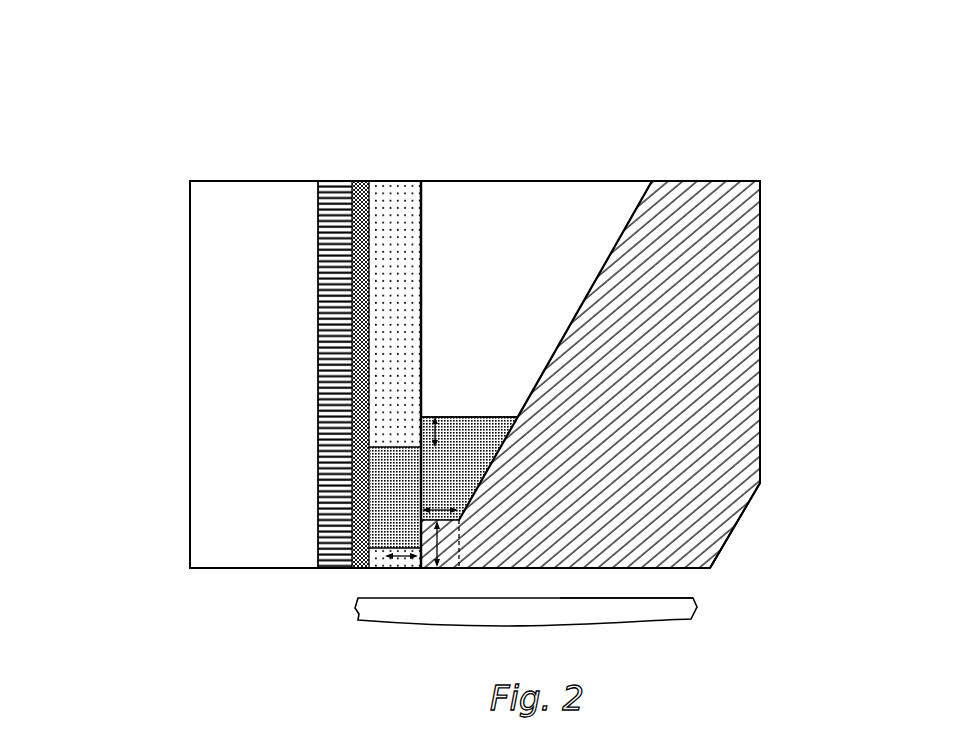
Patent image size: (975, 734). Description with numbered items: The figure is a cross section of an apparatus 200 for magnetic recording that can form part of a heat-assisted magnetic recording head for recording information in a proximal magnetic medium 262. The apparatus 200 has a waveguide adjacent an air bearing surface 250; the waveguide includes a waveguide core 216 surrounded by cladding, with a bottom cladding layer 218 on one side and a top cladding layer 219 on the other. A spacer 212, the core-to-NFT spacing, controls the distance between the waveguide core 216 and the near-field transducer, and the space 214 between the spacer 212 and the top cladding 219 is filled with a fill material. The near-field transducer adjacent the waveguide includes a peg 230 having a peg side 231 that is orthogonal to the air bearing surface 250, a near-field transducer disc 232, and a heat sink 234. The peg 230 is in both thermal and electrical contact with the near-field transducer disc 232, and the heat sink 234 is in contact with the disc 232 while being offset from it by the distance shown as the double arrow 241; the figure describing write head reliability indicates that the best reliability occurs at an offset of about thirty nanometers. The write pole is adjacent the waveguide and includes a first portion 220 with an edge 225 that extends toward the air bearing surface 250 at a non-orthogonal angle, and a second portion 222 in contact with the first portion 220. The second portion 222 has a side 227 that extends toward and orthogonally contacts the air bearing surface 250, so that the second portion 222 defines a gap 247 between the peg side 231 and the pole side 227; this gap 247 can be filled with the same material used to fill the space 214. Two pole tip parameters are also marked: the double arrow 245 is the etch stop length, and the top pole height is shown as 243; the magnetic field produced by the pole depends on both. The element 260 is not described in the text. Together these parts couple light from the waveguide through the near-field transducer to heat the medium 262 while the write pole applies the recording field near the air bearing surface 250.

The apparatus 200 is at (573, 63).
The spacer 212 is at (360, 182).
The space 214 is at (398, 201).
The waveguide core 216 is at (318, 238).
The bottom cladding layer 218 is at (238, 292).
The top cladding layer 219 is at (456, 218).
The first portion of write pole 220 is at (713, 352).
The second portion of write pole 222 is at (460, 527).
The edge 225 is at (597, 277).
The side 227 is at (413, 560).
The peg 230 is at (340, 568).
The peg side 231 is at (363, 567).
The near-field transducer disc 232 is at (372, 465).
The heat sink 234 is at (467, 458).
The offset distance 241 is at (420, 425).
The top pole height 243 is at (437, 542).
The etch stop length 245 is at (420, 504).
The gap 247 is at (402, 560).
The air bearing surface 250 is at (675, 568).
The plate 260 is at (657, 602).
The magnetic medium 262 is at (628, 607).